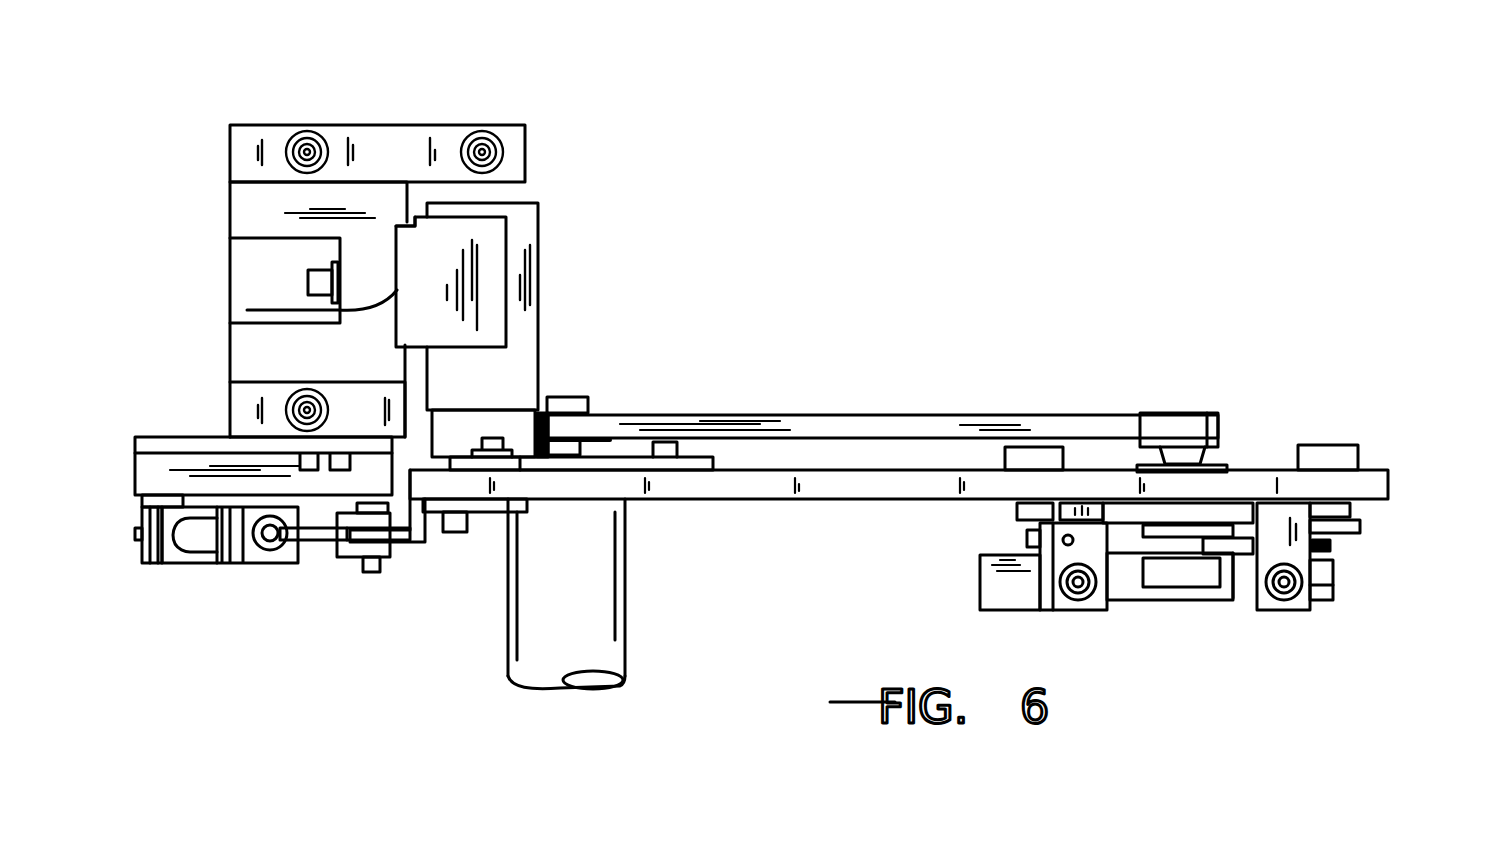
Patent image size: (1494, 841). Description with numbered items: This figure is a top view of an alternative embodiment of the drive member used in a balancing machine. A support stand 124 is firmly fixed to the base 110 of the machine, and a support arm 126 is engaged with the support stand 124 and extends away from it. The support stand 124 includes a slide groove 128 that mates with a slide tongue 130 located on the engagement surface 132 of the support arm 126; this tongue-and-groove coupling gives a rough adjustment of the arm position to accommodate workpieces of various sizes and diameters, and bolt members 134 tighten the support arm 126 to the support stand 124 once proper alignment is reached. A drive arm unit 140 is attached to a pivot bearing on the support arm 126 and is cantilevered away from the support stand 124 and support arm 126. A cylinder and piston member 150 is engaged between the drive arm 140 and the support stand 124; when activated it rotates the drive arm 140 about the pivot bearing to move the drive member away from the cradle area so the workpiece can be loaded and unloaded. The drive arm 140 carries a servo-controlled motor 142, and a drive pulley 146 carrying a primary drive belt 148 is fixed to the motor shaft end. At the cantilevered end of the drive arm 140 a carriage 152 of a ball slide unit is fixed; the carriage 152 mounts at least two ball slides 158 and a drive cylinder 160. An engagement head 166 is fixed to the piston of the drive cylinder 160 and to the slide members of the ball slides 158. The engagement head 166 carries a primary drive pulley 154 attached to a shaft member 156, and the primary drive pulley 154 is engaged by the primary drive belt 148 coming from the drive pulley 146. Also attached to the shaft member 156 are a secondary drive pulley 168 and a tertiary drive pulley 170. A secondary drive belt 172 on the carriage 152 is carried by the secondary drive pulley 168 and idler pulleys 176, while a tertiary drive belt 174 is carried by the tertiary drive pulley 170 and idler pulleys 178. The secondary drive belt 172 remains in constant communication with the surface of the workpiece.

The base 110 is at (402, 142).
The support stand 124 is at (242, 355).
The support arm 126 is at (488, 243).
The slide groove 128 is at (404, 348).
The slide tongue 130 is at (400, 220).
The engagement surface 132 is at (247, 310).
The bolt members 134 is at (310, 281).
The drive arm unit 140 is at (853, 500).
The servo-controlled motor 142 is at (543, 647).
The drive pulley 146 is at (567, 397).
The primary drive belt 148 is at (818, 430).
The cylinder and piston member 150 is at (295, 547).
The carriage 152 is at (1363, 530).
The primary drive pulley 154 is at (1177, 413).
The shaft member 156 is at (1180, 463).
The ball slides 158 is at (1080, 596).
The drive cylinder 160 is at (997, 585).
The engagement head 166 is at (1327, 585).
The secondary drive pulley 168 is at (1245, 512).
The tertiary drive pulley 170 is at (1243, 545).
The secondary drive belt 172 is at (1257, 513).
The tertiary drive belt 174 is at (1250, 510).
The idler pulleys 176 is at (1363, 507).
The idler pulleys 178 is at (1340, 562).